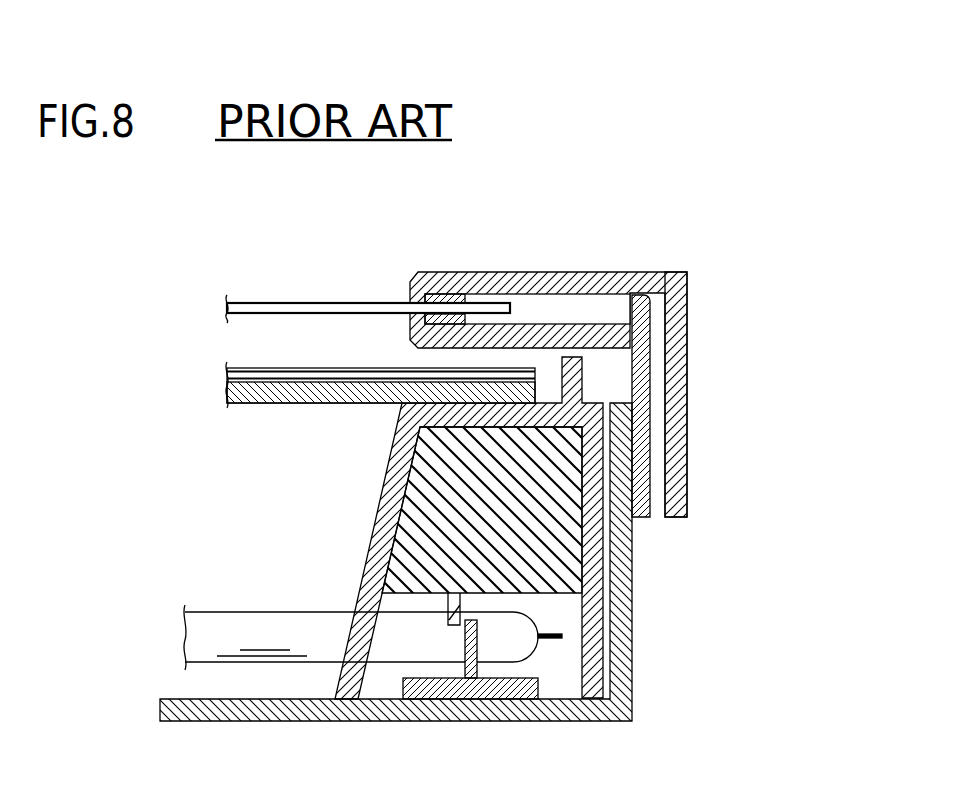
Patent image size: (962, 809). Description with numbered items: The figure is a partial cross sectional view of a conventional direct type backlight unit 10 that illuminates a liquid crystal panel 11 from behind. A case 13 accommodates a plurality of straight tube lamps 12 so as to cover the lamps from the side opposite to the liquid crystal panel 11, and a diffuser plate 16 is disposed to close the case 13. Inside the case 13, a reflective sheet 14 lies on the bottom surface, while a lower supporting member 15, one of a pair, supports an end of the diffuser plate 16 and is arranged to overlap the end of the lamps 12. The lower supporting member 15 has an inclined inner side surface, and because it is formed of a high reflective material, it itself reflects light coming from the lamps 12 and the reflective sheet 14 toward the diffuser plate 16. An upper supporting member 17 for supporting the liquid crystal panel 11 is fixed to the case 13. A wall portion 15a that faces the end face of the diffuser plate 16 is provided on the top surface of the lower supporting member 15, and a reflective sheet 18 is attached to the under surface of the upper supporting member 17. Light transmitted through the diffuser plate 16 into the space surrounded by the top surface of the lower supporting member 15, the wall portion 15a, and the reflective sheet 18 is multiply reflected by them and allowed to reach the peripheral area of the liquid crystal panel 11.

The backlight unit 10 is at (298, 338).
The liquid crystal panel 11 is at (402, 293).
The straight tube lamp 12 is at (336, 612).
The case 13 is at (438, 699).
The reflective sheet 14 is at (250, 682).
The lower supporting member 15 is at (458, 513).
The wall portion 15a is at (653, 367).
The diffuser plate 16 is at (353, 377).
The upper supporting member 17 is at (630, 297).
The reflective sheet 18 is at (556, 332).